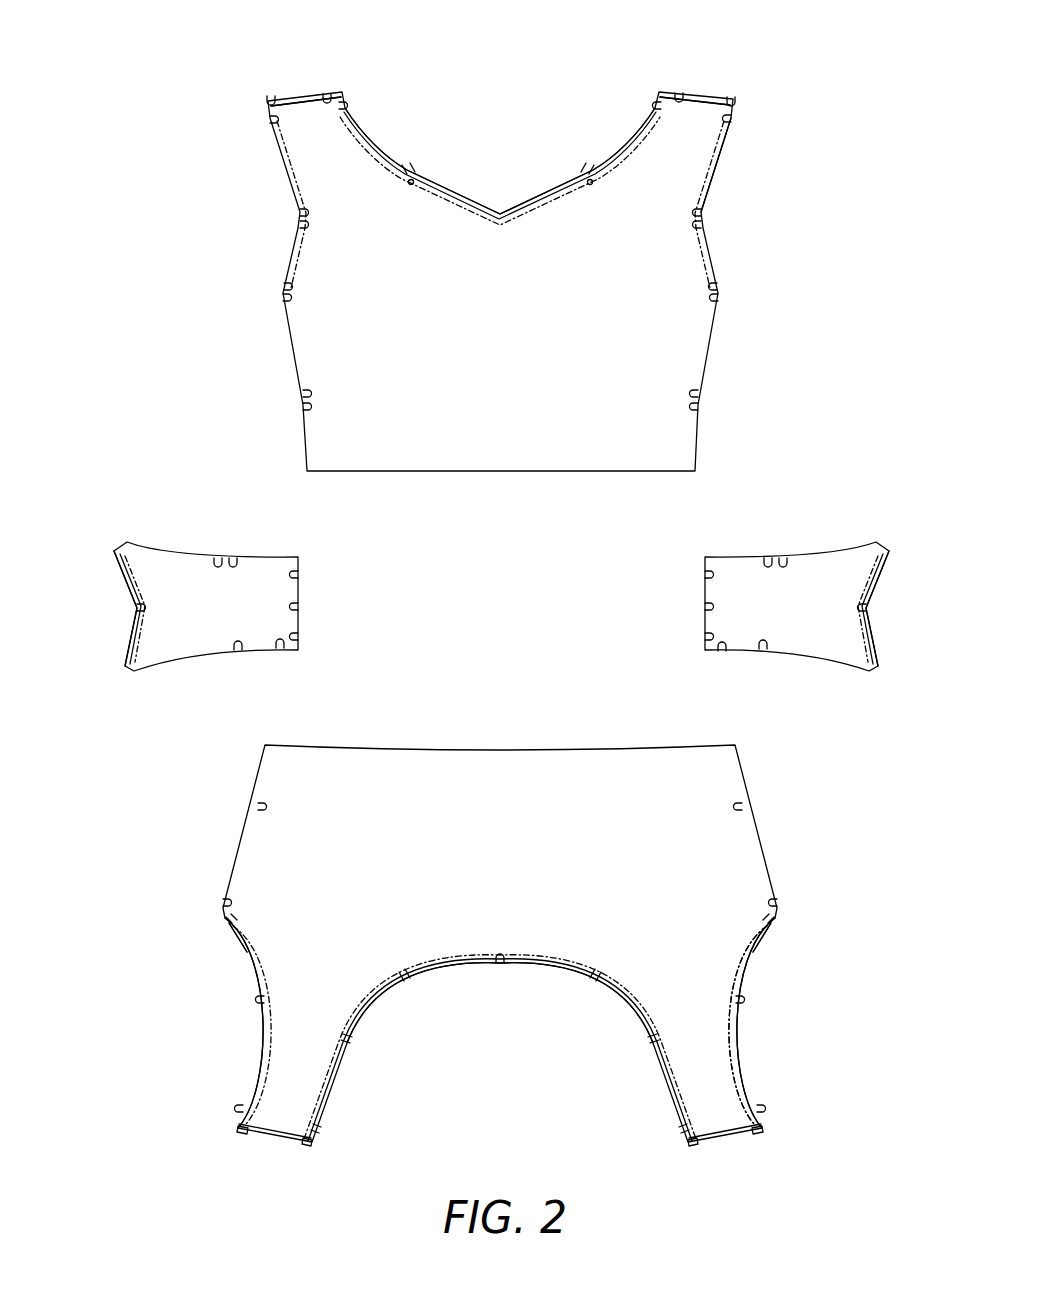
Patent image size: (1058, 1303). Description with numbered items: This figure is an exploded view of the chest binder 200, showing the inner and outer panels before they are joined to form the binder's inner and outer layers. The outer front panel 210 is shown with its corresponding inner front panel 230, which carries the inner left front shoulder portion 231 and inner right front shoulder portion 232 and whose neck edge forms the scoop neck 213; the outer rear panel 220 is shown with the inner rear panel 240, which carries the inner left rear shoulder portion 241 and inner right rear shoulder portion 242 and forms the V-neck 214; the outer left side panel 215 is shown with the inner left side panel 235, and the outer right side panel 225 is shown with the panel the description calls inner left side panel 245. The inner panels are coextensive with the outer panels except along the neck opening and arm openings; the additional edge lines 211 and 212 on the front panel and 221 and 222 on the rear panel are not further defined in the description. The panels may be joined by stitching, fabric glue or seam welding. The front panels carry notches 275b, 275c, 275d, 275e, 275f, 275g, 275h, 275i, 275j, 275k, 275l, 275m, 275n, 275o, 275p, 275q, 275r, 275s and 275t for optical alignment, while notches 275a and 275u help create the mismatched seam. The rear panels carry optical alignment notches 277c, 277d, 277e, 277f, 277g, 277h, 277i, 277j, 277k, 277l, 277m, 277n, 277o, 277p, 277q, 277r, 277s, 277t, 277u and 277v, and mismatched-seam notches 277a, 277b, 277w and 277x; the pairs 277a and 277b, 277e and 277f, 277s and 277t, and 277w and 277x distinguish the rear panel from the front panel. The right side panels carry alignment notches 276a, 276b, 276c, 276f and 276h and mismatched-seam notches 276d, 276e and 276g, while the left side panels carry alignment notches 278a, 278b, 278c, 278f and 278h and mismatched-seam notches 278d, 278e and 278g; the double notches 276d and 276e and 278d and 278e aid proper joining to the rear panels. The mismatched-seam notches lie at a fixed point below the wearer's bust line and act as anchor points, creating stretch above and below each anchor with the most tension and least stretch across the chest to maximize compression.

The garment pattern set 200 is at (173, 105).
The outer front panel 210 is at (752, 956).
The right leg seam allowance line 211 is at (743, 1046).
The left leg opening edge 212 is at (259, 1050).
The scoop neck 213 is at (522, 968).
The V-neck 214 is at (491, 204).
The outer left side panel 215 is at (877, 590).
The outer rear panel 220 is at (726, 150).
The right side seam allowance line 221 is at (716, 185).
The left side seam allowance line 222 is at (287, 152).
The outer right side panel 225 is at (126, 590).
The inner front panel 230 is at (482, 754).
The inner left front shoulder portion 231 is at (693, 1099).
The inner right front shoulder portion 232 is at (271, 1099).
The inner left side panel 235 is at (830, 646).
The inner rear panel 240 is at (670, 444).
The inner left rear shoulder portion 241 is at (661, 151).
The inner right rear shoulder portion 242 is at (306, 151).
The inner left side panel 245 is at (178, 646).
The notch 275a is at (258, 805).
The notch 275b is at (222, 902).
The notch 275c is at (232, 924).
The notch 275d is at (262, 1000).
The notch 275e is at (239, 1108).
The notch 275f is at (240, 1136).
The notch 275g is at (305, 1146).
The notch 275h is at (318, 1132).
The notch 275i is at (351, 1045).
The notch 275j is at (406, 981).
The notch 275k is at (499, 968).
The notch 275l is at (594, 981).
The notch 275m is at (649, 1045).
The notch 275n is at (682, 1132).
The notch 275o is at (695, 1146).
The notch 275p is at (760, 1136).
The notch 275q is at (761, 1108).
The notch 275r is at (740, 998).
The notch 275s is at (768, 924).
The notch 275t is at (778, 902).
The notch 275u is at (742, 805).
The notch 276a is at (300, 639).
The notch 276b is at (300, 607).
The notch 276c is at (300, 574).
The notch 276d is at (235, 555).
The notch 276e is at (218, 556).
The notch 276f is at (136, 608).
The notch 276g is at (238, 652).
The notch 276h is at (280, 650).
The notch 277a is at (303, 409).
The notch 277b is at (302, 395).
The notch 277c is at (282, 299).
The notch 277d is at (282, 288).
The notch 277e is at (298, 226).
The notch 277f is at (298, 213).
The notch 277g is at (270, 121).
The notch 277h is at (269, 98).
The notch 277i is at (327, 93).
The notch 277j is at (346, 104).
The notch 277k is at (408, 169).
The notch 277l is at (413, 178).
The notch 277m is at (587, 176).
The notch 277n is at (591, 167).
The notch 277o is at (655, 104).
The notch 277p is at (679, 92).
The notch 277q is at (734, 97).
The notch 277r is at (737, 119).
The notch 277s is at (704, 214).
The notch 277t is at (704, 226).
The notch 277u is at (720, 287).
The notch 277v is at (720, 298).
The notch 277w is at (700, 396).
The notch 277x is at (699, 408).
The notch 278a is at (704, 639).
The notch 278b is at (704, 607).
The notch 278c is at (704, 574).
The notch 278d is at (767, 555).
The notch 278e is at (783, 556).
The notch 278f is at (867, 608).
The notch 278g is at (763, 652).
The notch 278h is at (722, 653).